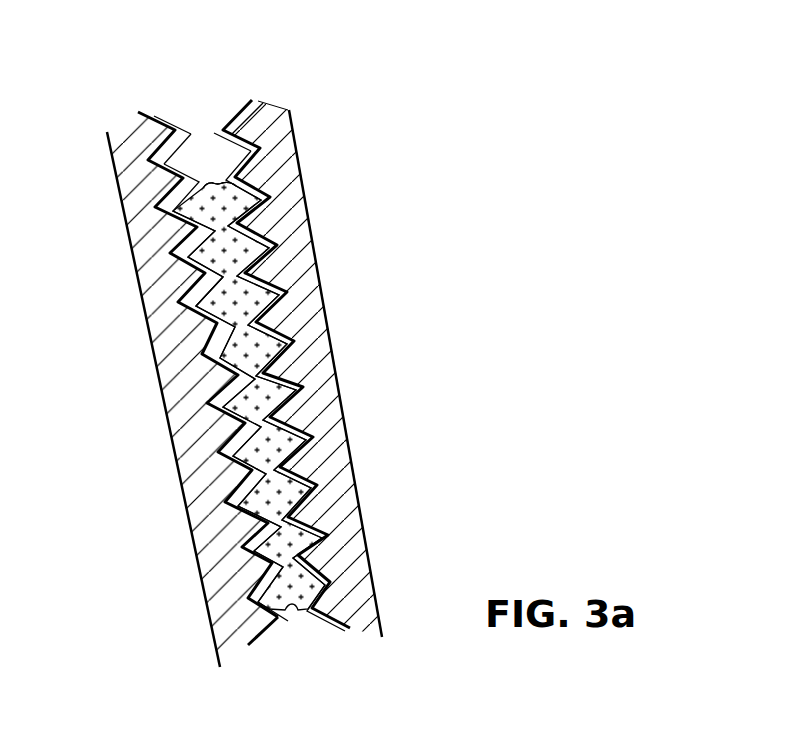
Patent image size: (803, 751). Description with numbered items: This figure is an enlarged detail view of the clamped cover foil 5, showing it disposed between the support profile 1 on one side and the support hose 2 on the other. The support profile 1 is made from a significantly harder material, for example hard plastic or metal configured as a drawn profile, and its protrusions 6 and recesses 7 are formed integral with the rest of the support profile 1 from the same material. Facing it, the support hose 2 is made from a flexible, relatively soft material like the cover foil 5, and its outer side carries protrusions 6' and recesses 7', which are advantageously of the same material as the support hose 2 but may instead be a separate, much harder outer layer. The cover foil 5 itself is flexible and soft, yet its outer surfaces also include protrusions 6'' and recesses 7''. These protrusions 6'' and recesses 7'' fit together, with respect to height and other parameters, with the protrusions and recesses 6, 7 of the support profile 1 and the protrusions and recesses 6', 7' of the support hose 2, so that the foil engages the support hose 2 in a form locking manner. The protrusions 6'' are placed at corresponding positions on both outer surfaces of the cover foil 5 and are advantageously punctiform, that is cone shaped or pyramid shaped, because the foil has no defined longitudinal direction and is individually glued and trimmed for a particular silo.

The support profile 1 is at (317, 362).
The support hose 2 is at (143, 257).
The cover foil 5 is at (240, 246).
The protrusion of the support profile 6 is at (297, 88).
The recess of the support profile 7 is at (308, 131).
The protrusion of the support hose 6' is at (118, 106).
The recess of the support hose 7' is at (117, 168).
The protrusion of the cover foil 6'' is at (142, 218).
The recess of the cover foil 7'' is at (146, 310).